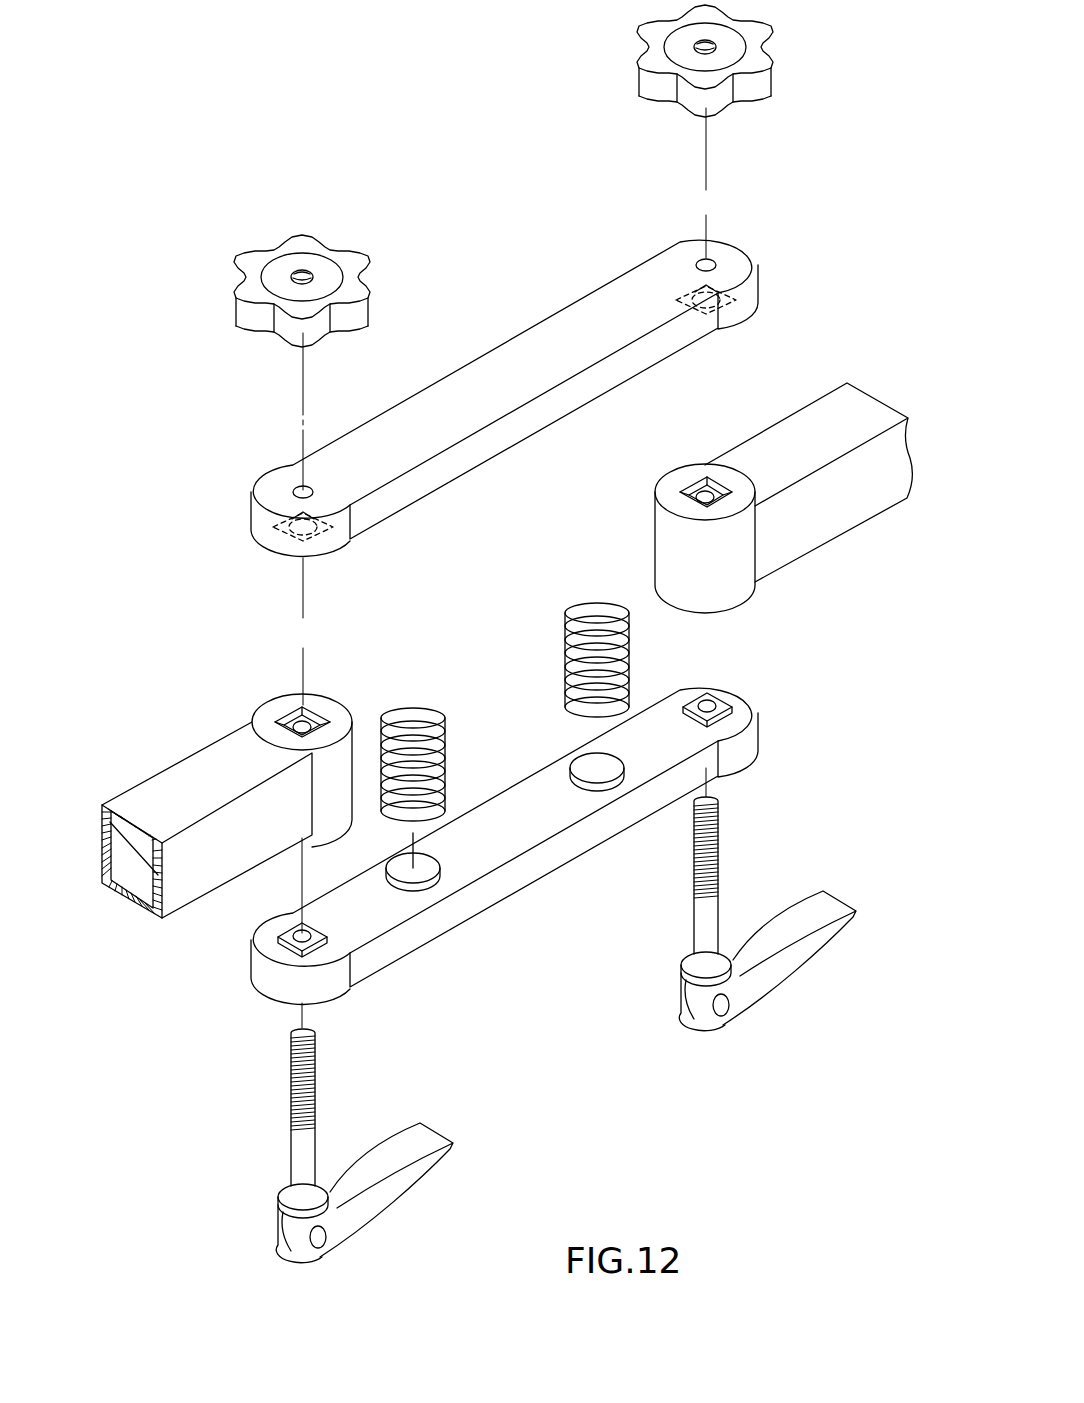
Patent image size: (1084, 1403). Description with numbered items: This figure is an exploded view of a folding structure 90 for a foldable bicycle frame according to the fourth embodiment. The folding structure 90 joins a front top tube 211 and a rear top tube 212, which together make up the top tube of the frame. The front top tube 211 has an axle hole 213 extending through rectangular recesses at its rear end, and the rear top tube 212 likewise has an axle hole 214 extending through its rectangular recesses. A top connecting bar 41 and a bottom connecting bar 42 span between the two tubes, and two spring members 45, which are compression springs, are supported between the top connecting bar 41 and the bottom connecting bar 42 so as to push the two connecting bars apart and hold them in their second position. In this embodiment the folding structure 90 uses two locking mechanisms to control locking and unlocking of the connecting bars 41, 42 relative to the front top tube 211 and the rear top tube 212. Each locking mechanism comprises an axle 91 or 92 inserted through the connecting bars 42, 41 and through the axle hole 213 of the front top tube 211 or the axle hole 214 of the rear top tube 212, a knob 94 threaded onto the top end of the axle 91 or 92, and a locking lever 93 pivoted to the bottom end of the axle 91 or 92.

The folding structure 90 is at (412, 172).
The knob 94 is at (665, 72).
The top connecting bar 41 is at (580, 327).
The rear top tube 212 is at (810, 413).
The axle hole 214 is at (702, 497).
The front top tube 211 is at (175, 777).
The axle hole 213 is at (295, 724).
The spring member 45 is at (588, 603).
The bottom connecting bar 42 is at (522, 797).
The axle 91 is at (290, 1163).
The axle 92 is at (697, 942).
The locking lever 93 is at (363, 1237).